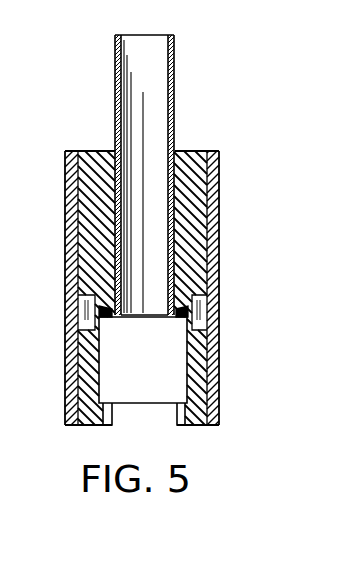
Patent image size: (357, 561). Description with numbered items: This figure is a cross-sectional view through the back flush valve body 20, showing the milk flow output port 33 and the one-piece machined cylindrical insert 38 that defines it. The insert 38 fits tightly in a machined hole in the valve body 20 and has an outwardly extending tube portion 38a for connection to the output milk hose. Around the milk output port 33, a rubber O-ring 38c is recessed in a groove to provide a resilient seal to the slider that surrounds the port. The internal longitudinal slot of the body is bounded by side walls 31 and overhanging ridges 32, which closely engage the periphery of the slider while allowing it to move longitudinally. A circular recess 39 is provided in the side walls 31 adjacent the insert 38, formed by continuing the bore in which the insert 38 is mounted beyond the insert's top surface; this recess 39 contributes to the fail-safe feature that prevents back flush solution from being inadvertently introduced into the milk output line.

The valve body 20 is at (220, 300).
The cylindrical insert 38 is at (192, 150).
The tube portion 38a is at (174, 85).
The milk flow output port 33 is at (155, 306).
The circular recess 39 is at (92, 319).
The rubber O-ring 38c is at (182, 317).
The side walls 31 is at (187, 388).
The overhanging ridges 32 is at (177, 400).